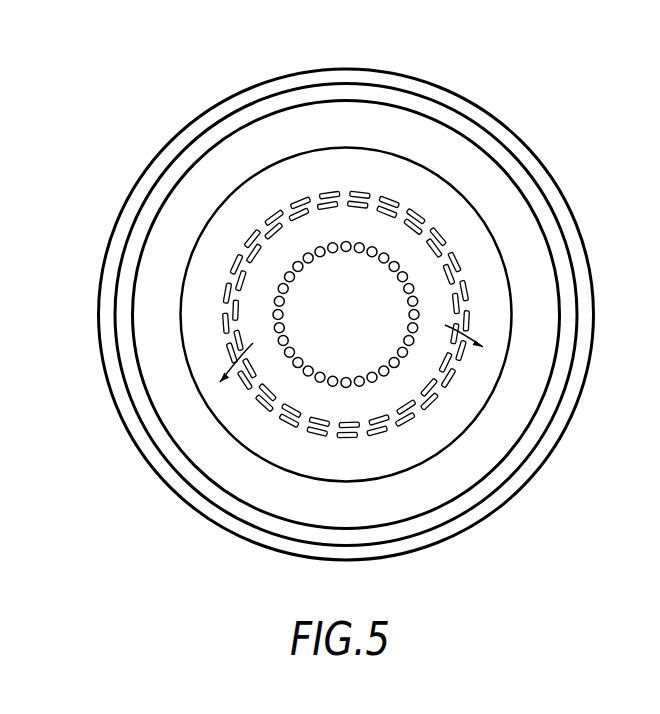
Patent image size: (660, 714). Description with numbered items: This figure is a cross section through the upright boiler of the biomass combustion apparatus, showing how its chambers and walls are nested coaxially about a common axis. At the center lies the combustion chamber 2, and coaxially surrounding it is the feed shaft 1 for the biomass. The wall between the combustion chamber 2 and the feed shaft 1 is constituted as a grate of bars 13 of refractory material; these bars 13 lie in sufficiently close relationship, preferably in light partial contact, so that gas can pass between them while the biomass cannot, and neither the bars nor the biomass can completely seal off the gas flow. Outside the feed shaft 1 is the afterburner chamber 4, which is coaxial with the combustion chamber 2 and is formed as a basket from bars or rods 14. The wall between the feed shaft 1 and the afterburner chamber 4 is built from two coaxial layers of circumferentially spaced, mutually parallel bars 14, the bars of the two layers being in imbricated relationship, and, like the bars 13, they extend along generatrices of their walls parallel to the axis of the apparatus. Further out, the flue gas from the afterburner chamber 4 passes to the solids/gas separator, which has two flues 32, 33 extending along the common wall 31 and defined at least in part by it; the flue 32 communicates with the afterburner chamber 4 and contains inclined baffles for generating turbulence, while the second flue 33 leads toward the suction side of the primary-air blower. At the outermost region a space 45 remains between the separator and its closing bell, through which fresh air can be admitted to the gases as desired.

The feed shaft 1 is at (434, 364).
The combustion chamber 2 is at (377, 349).
The afterburner chamber 4 is at (394, 170).
The bars 13 is at (320, 248).
The bars 14 is at (463, 270).
The common wall 31 is at (205, 480).
The flue 32 is at (547, 297).
The second flue 33 is at (567, 260).
The space 45 is at (523, 473).